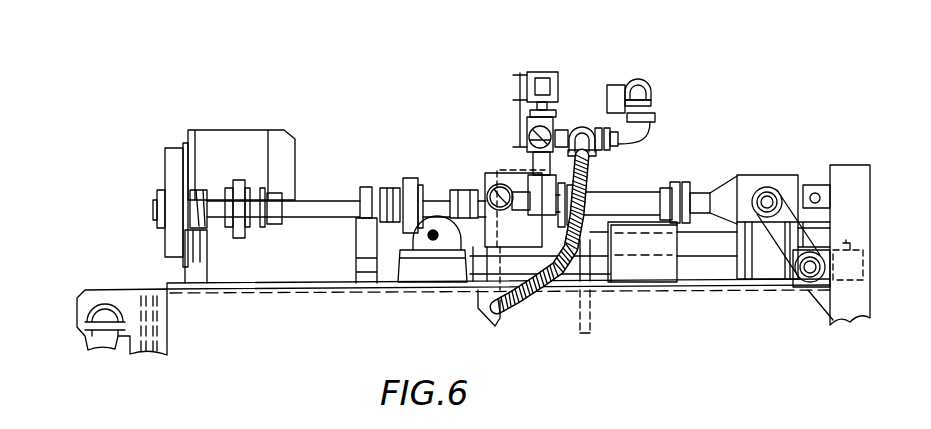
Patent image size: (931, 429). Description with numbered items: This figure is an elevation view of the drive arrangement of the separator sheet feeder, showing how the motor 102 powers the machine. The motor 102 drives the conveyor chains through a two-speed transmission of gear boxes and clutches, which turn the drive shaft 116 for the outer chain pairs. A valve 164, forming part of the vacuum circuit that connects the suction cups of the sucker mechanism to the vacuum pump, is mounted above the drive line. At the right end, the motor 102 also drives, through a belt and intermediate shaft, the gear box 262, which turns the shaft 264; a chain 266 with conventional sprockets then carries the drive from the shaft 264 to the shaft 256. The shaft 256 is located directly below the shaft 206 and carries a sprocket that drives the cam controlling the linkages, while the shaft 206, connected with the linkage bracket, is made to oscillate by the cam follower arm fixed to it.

The motor 102 is at (293, 138).
The drive shaft 116 is at (433, 235).
The valve 164 is at (557, 77).
The gear box 262 is at (753, 180).
The shaft 206 is at (823, 190).
The shaft 264 is at (760, 218).
The shaft 256 is at (760, 214).
The chain 266 is at (762, 300).